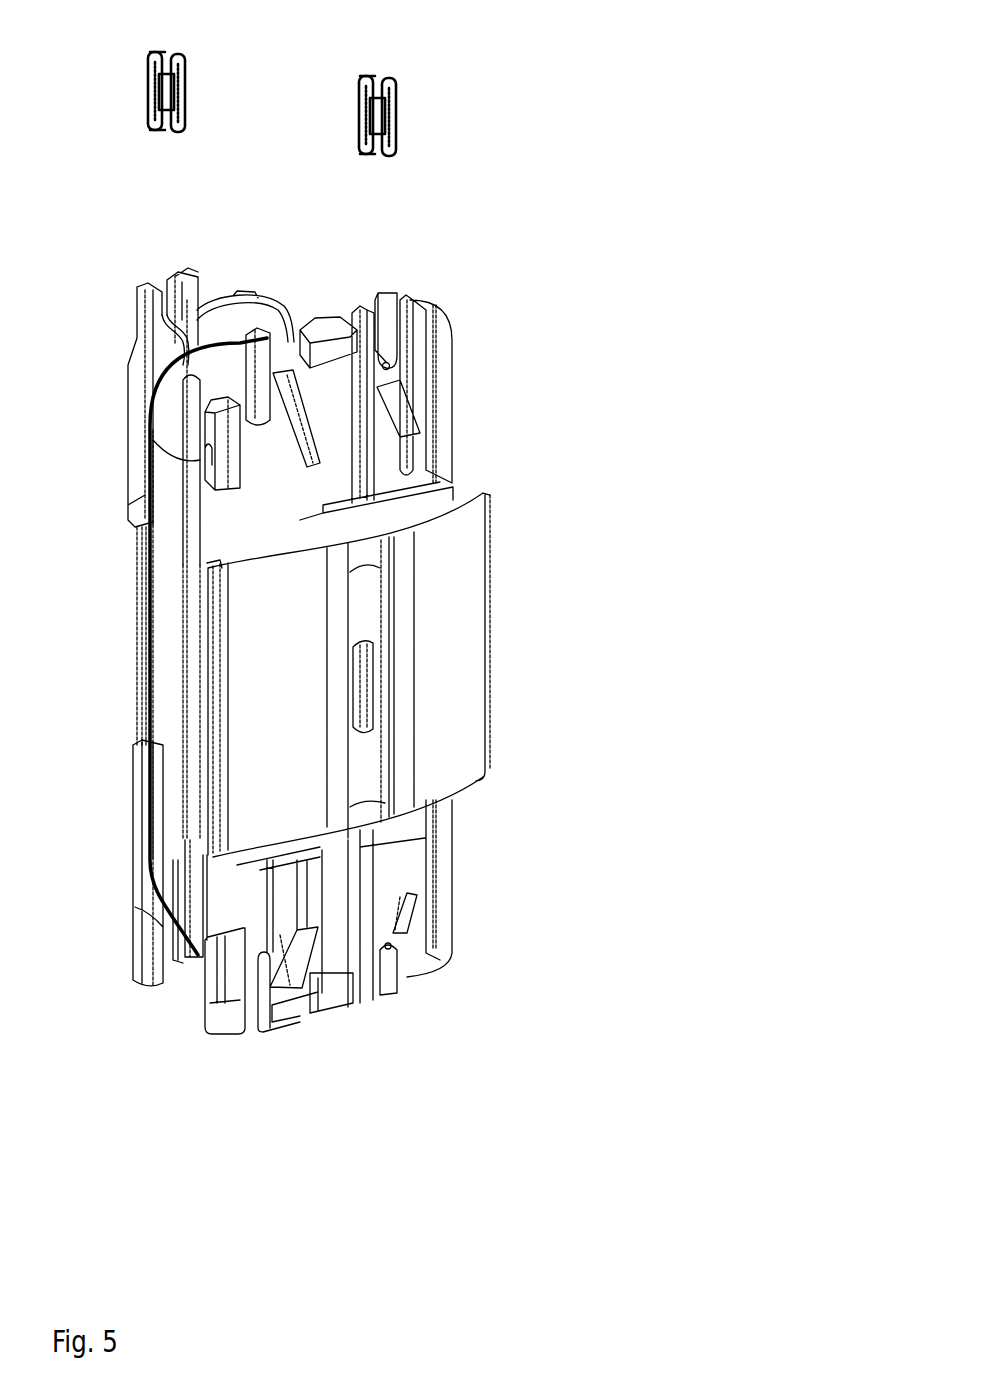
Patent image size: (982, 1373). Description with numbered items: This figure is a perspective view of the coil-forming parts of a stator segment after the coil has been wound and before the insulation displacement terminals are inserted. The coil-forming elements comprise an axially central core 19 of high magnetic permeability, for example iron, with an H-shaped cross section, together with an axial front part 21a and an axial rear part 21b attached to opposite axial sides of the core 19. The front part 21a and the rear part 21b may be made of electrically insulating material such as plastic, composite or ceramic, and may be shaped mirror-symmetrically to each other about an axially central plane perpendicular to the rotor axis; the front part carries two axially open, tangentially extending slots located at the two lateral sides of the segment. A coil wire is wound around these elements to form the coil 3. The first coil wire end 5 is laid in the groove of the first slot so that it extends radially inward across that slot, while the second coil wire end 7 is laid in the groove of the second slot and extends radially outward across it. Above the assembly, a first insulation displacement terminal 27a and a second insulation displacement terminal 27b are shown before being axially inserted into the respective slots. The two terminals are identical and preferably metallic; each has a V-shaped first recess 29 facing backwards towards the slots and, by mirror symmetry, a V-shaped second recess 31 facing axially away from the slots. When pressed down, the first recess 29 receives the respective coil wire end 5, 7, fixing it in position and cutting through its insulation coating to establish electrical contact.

The coil 3 is at (168, 583).
The first coil wire end 5 is at (176, 337).
The second coil wire end 7 is at (392, 366).
The core 19 is at (452, 642).
The front part 21a is at (455, 392).
The rear part 21b is at (455, 893).
The first insulation displacement terminal 27a is at (130, 102).
The second insulation displacement terminal 27b is at (417, 133).
The first recess 29 is at (377, 157).
The second recess 31 is at (377, 75).